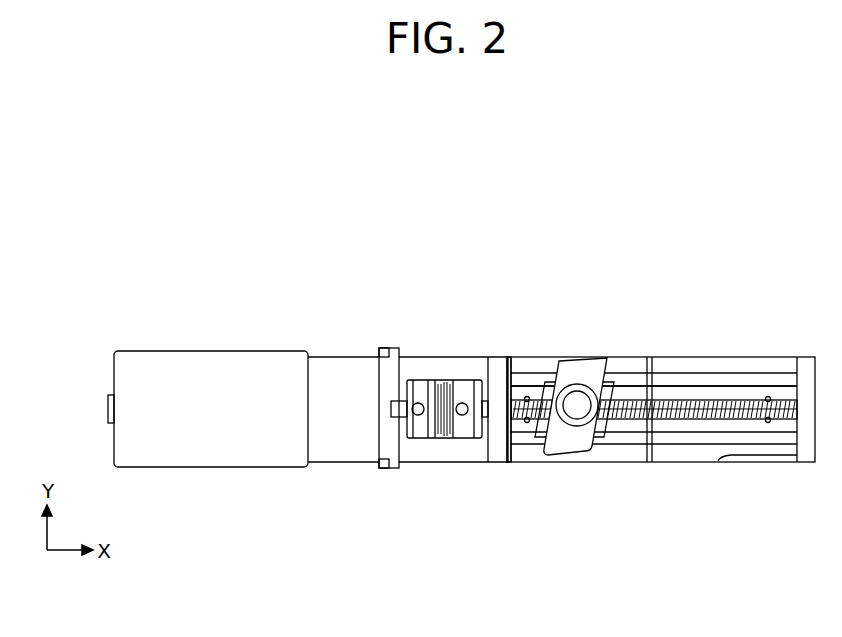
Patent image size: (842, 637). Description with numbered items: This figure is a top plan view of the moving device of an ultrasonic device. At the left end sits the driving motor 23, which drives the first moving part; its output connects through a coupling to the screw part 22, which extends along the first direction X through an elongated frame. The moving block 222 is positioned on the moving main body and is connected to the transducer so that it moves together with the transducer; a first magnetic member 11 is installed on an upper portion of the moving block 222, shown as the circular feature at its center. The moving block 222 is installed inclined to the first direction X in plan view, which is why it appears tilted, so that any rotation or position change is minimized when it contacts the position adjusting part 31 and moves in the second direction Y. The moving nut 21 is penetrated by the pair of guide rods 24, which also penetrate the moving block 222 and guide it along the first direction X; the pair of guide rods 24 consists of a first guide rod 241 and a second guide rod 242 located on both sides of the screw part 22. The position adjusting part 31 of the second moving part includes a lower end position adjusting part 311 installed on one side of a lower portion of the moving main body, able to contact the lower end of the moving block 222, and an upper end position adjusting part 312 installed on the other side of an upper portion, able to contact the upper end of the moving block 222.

The first magnetic member 11 is at (577, 404).
The moving nut 21 is at (546, 384).
The screw part 22 is at (672, 390).
The driving motor 23 is at (203, 351).
The pair of guide rods 24 is at (788, 300).
The position adjusting part 31 is at (771, 567).
The moving block 222 is at (570, 452).
The first guide rod 241 is at (729, 440).
The second guide rod 242 is at (770, 380).
The lower end position adjusting part 311 is at (766, 461).
The upper end position adjusting part 312 is at (524, 358).